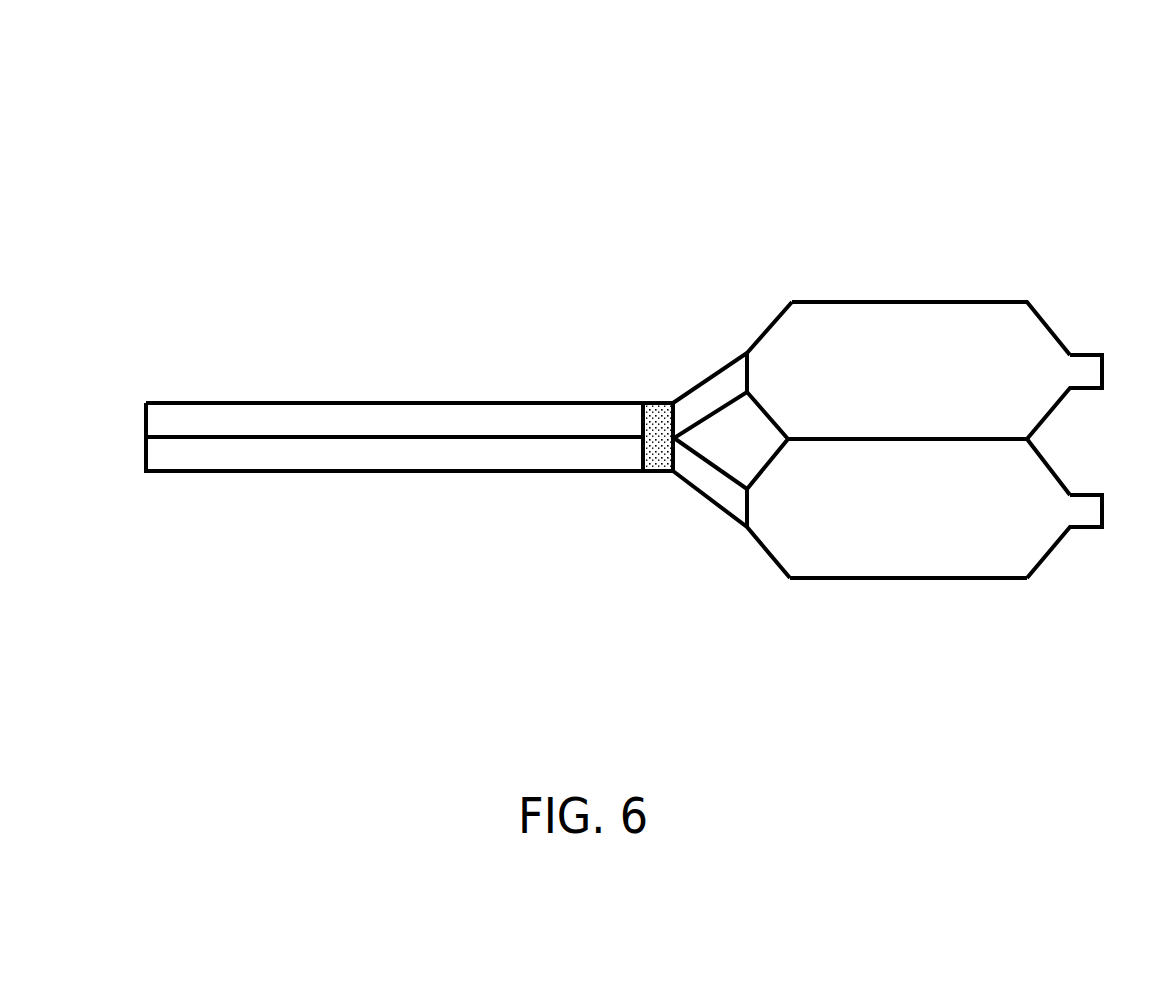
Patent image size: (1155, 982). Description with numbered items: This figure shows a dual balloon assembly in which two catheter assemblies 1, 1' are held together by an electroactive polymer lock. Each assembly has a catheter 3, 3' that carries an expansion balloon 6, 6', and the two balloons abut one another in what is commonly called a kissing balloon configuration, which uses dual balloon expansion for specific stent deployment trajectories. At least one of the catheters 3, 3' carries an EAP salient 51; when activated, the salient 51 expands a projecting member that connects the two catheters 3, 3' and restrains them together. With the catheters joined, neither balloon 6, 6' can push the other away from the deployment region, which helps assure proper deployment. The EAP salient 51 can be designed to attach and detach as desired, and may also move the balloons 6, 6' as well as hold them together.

The catheter assembly 1 is at (1029, 241).
The catheter assembly 1' is at (1052, 686).
The catheter 3 is at (394, 259).
The catheter 3' is at (394, 591).
The expansion balloon 6 is at (929, 279).
The expansion balloon 6' is at (930, 586).
The EAP salient 51 is at (661, 440).